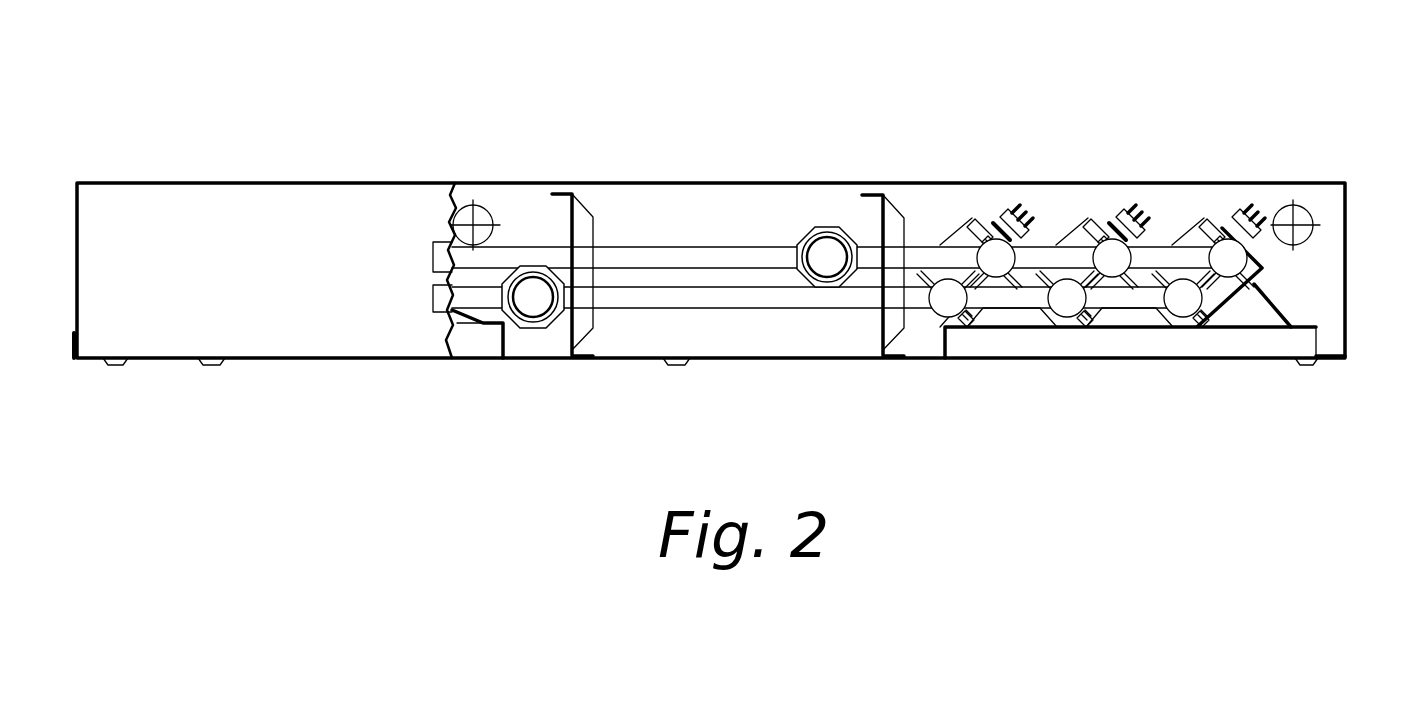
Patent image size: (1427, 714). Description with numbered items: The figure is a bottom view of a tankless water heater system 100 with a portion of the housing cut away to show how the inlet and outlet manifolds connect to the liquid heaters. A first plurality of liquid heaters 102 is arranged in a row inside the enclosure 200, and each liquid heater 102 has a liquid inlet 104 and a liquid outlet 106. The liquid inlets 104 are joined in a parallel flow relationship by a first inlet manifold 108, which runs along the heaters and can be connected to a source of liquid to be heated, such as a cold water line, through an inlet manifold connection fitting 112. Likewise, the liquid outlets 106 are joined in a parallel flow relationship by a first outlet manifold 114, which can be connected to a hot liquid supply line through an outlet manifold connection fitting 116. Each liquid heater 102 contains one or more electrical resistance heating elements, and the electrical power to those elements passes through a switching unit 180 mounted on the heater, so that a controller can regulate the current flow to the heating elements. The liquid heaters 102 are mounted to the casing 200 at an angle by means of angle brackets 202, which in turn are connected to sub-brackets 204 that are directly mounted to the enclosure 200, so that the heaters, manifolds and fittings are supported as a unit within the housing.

The tankless water heater system 100 is at (1230, 92).
The liquid heater 102 is at (1000, 215).
The liquid inlet 104 is at (966, 214).
The liquid outlet 106 is at (948, 305).
The first inlet manifold 108 is at (709, 255).
The inlet manifold connection fitting 112 is at (808, 232).
The first outlet manifold 114 is at (623, 298).
The outlet manifold connection fitting 116 is at (533, 322).
The switching unit 180 is at (1036, 205).
The enclosure 200 is at (1346, 220).
The angle bracket 202 is at (1256, 284).
The sub-bracket 204 is at (462, 362).